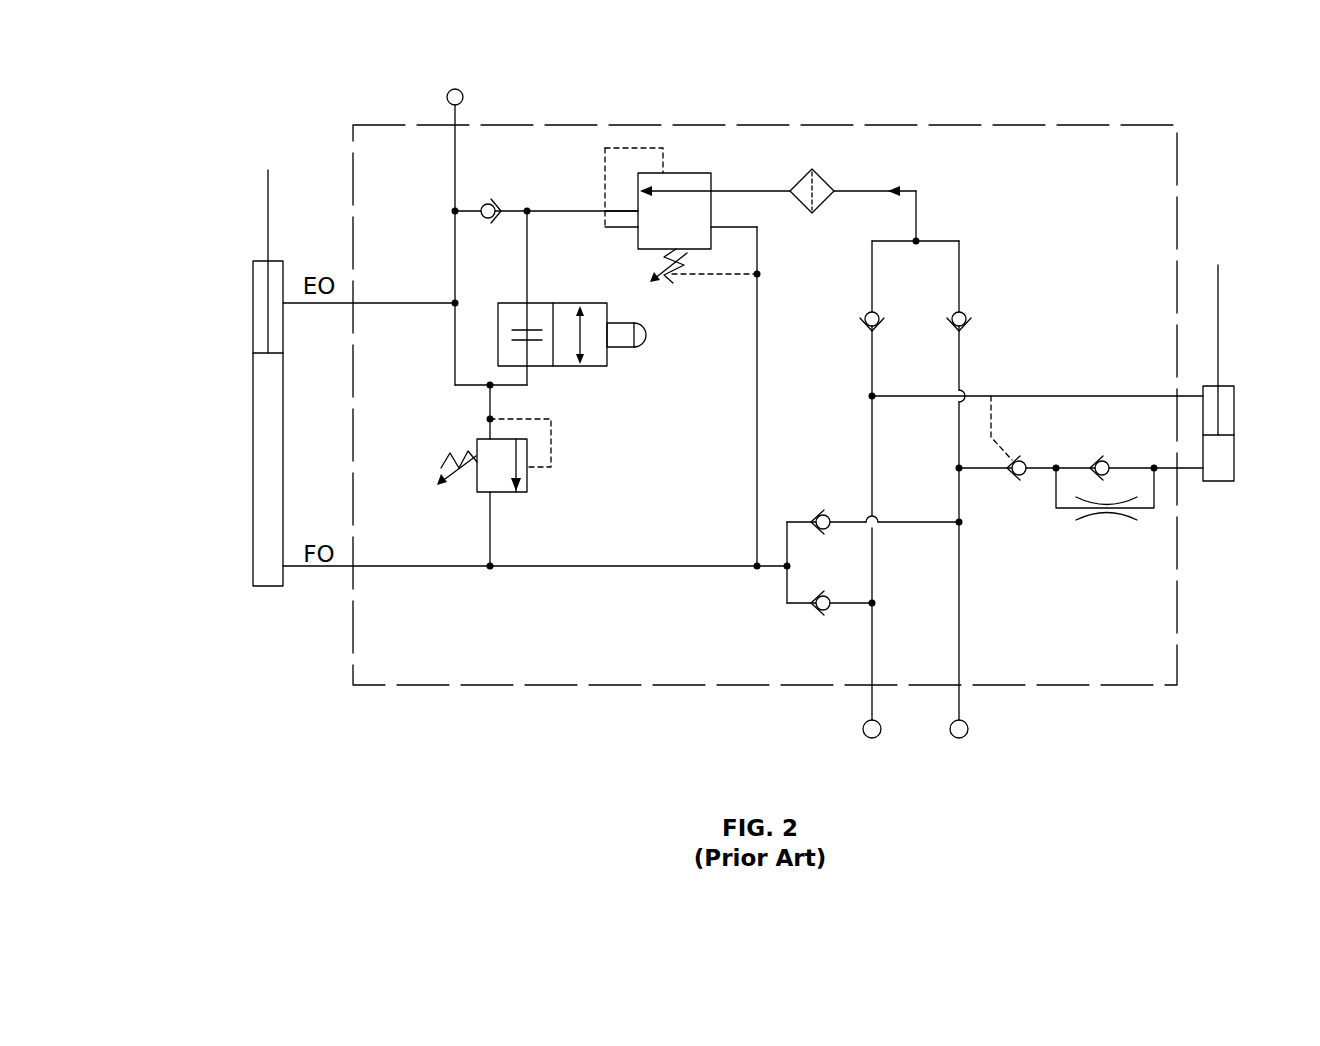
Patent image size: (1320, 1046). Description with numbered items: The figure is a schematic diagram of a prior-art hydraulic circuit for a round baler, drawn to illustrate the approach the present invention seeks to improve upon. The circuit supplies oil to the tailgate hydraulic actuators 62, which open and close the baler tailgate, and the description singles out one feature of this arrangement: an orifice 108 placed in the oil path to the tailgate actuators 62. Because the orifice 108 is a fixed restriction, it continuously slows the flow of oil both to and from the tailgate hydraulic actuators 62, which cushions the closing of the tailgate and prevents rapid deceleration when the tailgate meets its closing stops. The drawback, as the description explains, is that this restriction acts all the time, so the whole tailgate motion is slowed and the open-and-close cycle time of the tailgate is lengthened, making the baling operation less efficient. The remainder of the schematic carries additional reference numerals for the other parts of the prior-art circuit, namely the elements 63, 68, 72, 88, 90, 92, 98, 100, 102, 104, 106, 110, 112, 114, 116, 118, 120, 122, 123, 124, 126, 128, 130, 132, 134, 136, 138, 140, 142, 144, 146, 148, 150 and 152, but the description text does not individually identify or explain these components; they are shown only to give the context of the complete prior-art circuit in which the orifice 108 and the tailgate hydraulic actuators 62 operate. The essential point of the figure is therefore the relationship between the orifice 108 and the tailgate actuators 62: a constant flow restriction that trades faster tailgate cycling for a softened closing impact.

The tailgate hydraulic actuator 62 is at (1220, 459).
The tailgate cylinder rod 63 is at (1220, 331).
The tensioning cylinder 68 is at (262, 449).
The tensioning cylinder rod 72 is at (262, 303).
The pressure reducing valve 88 is at (668, 182).
The accumulator 90 is at (598, 303).
The relief valve 92 is at (528, 488).
The line A 98 is at (962, 627).
The line between check valves 100 is at (1043, 472).
The line 102 is at (962, 367).
The pilot operated check valve 104 is at (1022, 461).
The check valve 106 is at (1098, 462).
The orifice 108 is at (1110, 520).
The check valve 110 is at (966, 323).
The filter 112 is at (822, 172).
The line B 114 is at (875, 637).
The line D 116 is at (1093, 397).
The line 118 is at (875, 280).
The pilot line 120 is at (993, 436).
The check valve 122 is at (866, 329).
The line 123 is at (786, 191).
The tank line 124 is at (760, 402).
The line 126 is at (853, 517).
The line 128 is at (850, 607).
The line 130 is at (652, 568).
The check valve 132 is at (822, 513).
The check valve 134 is at (818, 594).
The line 136 is at (432, 300).
The line 138 is at (458, 240).
The line 140 is at (455, 362).
The gage line 142 is at (455, 148).
The line 144 is at (530, 214).
The gage port 146 is at (463, 100).
The check valve 148 is at (493, 204).
The line 150 is at (530, 375).
The pilot line 152 is at (488, 410).